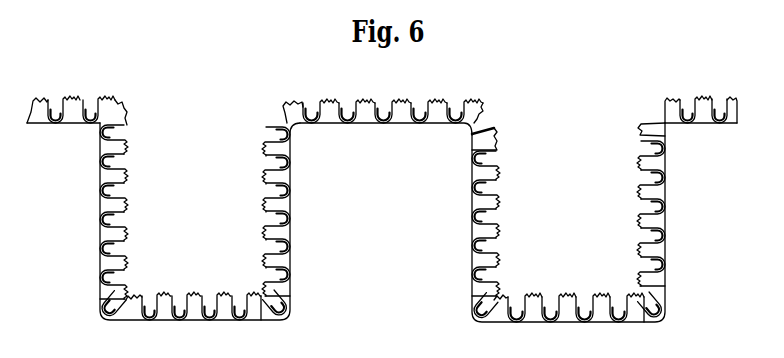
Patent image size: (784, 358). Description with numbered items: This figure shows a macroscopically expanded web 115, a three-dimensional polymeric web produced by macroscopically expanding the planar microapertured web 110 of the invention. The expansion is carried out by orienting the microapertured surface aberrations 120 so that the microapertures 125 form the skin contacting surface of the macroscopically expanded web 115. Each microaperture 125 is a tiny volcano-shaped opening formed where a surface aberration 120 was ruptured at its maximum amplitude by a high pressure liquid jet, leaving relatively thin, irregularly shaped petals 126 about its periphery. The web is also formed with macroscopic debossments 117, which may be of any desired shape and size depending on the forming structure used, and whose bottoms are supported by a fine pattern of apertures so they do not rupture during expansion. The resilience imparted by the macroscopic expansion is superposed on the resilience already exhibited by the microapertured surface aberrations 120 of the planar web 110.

The microapertured web 110 is at (282, 95).
The macroscopically expanded web 115 is at (495, 109).
The macroscopic debossments 117 is at (206, 253).
The surface aberration 120 is at (115, 158).
The microaperture 125 is at (70, 100).
The petals 126 is at (122, 140).